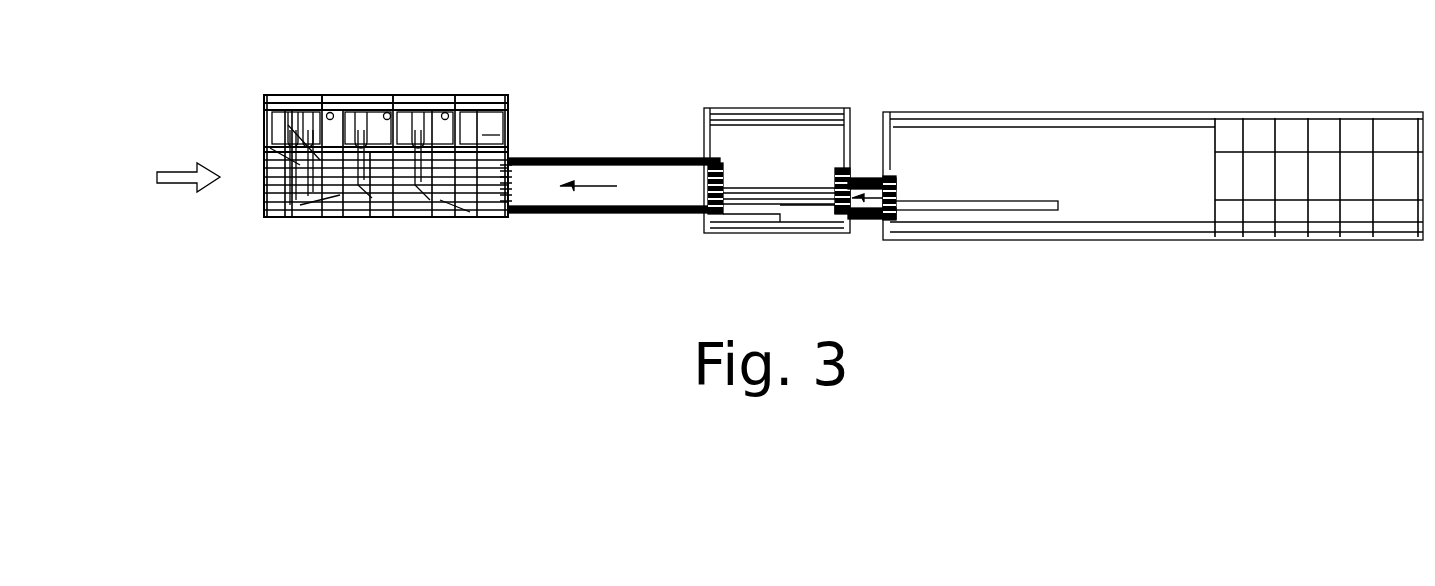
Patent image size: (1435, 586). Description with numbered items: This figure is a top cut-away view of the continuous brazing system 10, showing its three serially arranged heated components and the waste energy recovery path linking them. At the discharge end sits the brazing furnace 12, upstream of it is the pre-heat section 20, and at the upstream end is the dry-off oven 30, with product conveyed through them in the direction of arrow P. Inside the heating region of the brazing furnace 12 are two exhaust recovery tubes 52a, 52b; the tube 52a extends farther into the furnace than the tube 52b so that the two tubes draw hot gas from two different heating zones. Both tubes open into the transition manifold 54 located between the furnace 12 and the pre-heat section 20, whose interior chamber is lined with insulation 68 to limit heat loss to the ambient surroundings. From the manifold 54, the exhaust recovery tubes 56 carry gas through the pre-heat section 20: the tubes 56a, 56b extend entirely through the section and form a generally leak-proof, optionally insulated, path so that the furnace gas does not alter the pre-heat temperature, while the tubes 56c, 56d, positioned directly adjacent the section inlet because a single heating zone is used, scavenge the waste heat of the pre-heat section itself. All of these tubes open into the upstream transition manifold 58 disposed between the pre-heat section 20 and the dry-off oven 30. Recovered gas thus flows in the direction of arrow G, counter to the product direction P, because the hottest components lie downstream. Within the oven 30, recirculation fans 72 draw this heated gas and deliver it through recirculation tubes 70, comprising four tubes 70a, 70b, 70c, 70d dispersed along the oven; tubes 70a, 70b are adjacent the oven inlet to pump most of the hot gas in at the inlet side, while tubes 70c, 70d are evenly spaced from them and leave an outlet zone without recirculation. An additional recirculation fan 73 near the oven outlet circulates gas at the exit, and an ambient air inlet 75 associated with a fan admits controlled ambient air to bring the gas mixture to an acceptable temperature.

The continuous brazing system 10 is at (800, 87).
The brazing furnace 12 is at (1128, 112).
The pre-heat section 20 is at (762, 108).
The dry-off oven 30 is at (498, 95).
The exhaust recovery tube 52a is at (1012, 210).
The exhaust recovery tube 52b is at (897, 180).
The transition manifold 54 is at (869, 222).
The exhaust recovery tubes 56 is at (728, 182).
The exhaust recovery tube 56a is at (752, 208).
The exhaust recovery tube 56b is at (783, 206).
The exhaust recovery tube 56c is at (708, 190).
The exhaust recovery tube 56d is at (710, 178).
The upstream transition manifold 58 is at (592, 208).
The insulation 68 is at (870, 176).
The recirculation tubes 70 is at (352, 212).
The recirculation tube 70a is at (283, 145).
The recirculation tube 70b is at (286, 156).
The recirculation tube 70c is at (306, 212).
The recirculation tube 70d is at (462, 212).
The recirculation fans 72 is at (408, 95).
The recirculation fan 73 is at (497, 130).
The ambient air inlet 75 is at (300, 95).
The gas flow direction arrow G is at (608, 182).
The product conveyance direction arrow P is at (183, 183).